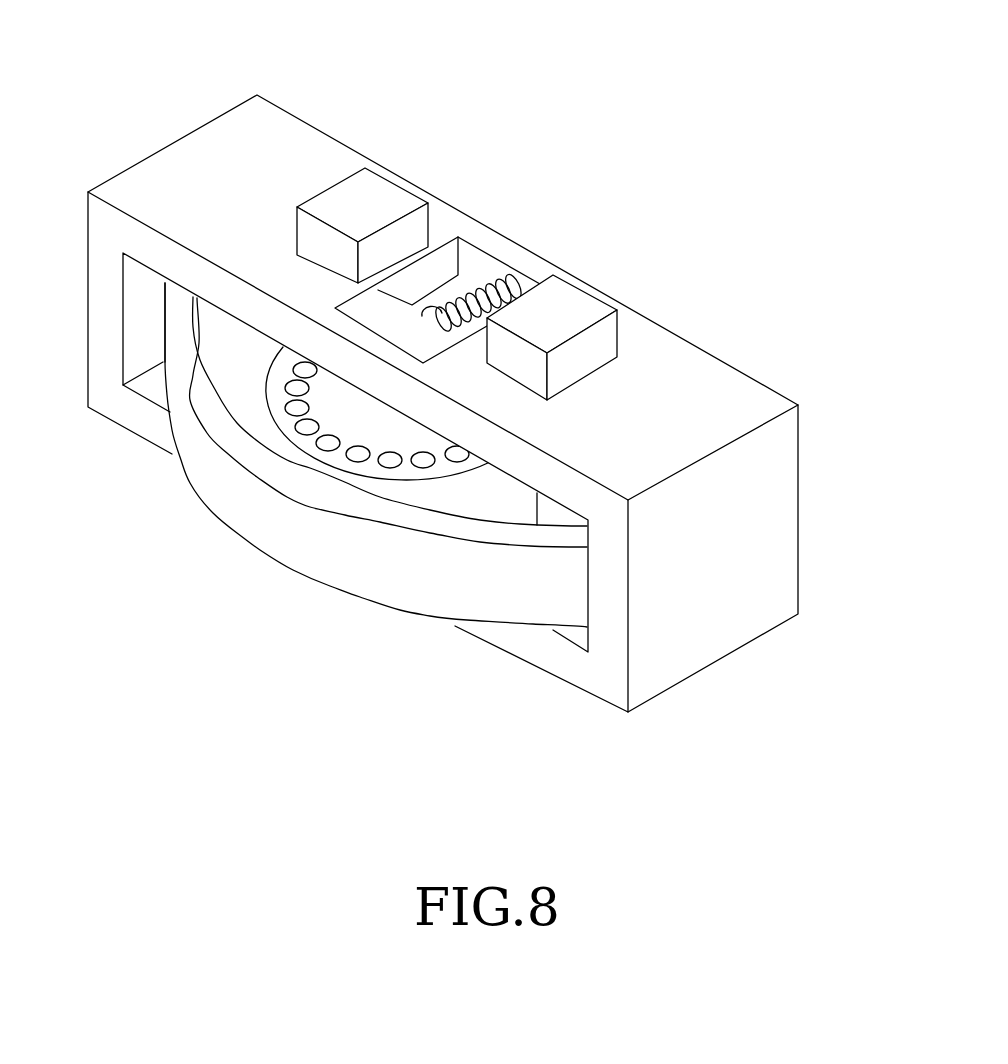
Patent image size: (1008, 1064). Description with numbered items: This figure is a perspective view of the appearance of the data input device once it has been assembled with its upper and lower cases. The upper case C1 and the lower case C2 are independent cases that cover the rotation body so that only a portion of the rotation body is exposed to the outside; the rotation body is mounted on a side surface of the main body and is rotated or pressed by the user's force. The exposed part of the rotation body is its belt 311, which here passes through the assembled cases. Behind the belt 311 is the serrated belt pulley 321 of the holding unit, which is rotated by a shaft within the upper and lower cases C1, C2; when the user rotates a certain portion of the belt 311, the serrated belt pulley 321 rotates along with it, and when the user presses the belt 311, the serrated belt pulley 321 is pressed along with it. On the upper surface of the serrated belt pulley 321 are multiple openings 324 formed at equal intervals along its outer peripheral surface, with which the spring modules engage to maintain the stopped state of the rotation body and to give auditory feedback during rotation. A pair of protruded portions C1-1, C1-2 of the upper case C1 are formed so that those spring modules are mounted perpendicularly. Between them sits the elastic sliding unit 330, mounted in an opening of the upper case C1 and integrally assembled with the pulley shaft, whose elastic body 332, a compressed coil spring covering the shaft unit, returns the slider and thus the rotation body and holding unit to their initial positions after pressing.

The upper case C1 is at (713, 425).
The protruded portion C1-1 is at (367, 202).
The protruded portion C1-2 is at (533, 312).
The lower case C2 is at (557, 647).
The belt 311 is at (397, 577).
The serrated belt pulley 321 is at (360, 470).
The openings 324 is at (300, 428).
The elastic sliding unit 330 is at (517, 282).
The elastic body 332 is at (455, 322).